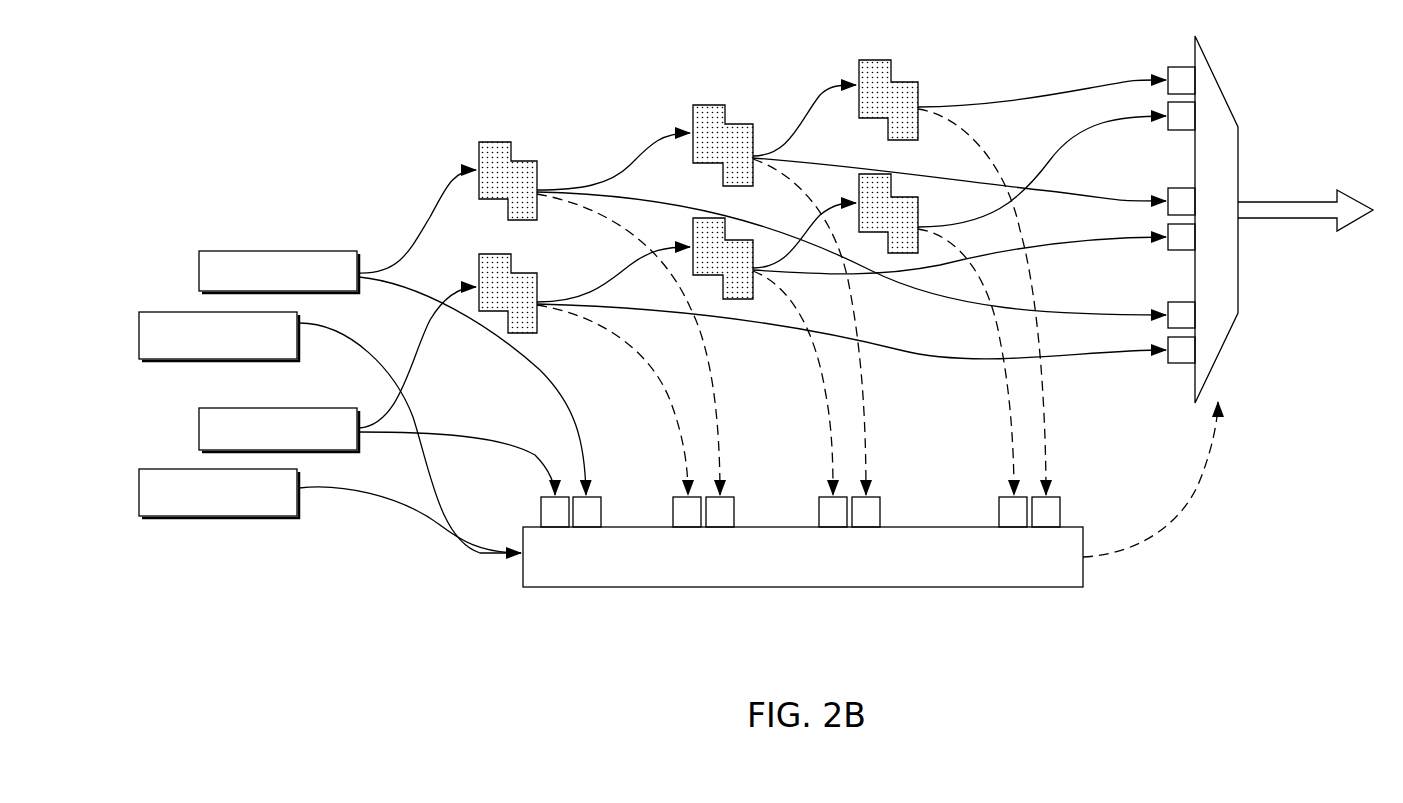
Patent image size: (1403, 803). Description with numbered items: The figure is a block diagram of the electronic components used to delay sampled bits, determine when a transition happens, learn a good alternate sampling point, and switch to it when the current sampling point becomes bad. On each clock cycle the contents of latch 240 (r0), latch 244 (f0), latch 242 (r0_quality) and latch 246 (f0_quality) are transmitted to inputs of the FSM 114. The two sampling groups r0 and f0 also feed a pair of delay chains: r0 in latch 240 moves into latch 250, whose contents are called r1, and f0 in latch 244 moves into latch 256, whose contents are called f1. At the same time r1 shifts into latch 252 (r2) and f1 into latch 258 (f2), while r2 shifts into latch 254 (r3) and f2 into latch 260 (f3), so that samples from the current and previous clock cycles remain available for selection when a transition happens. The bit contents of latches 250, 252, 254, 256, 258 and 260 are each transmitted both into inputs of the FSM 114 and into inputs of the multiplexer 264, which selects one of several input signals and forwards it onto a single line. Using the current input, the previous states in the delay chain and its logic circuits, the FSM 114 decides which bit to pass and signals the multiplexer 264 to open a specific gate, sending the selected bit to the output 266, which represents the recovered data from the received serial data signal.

The FSM 114 is at (655, 588).
The latch 240 is at (199, 272).
The latch 242 is at (139, 336).
The latch 244 is at (199, 430).
The latch 246 is at (139, 493).
The latch 250 is at (510, 150).
The latch 252 is at (710, 105).
The latch 254 is at (875, 60).
The latch 256 is at (510, 262).
The latch 258 is at (726, 228).
The latch 260 is at (891, 183).
The multiplexer 264 is at (1216, 80).
The output 266 is at (1290, 202).